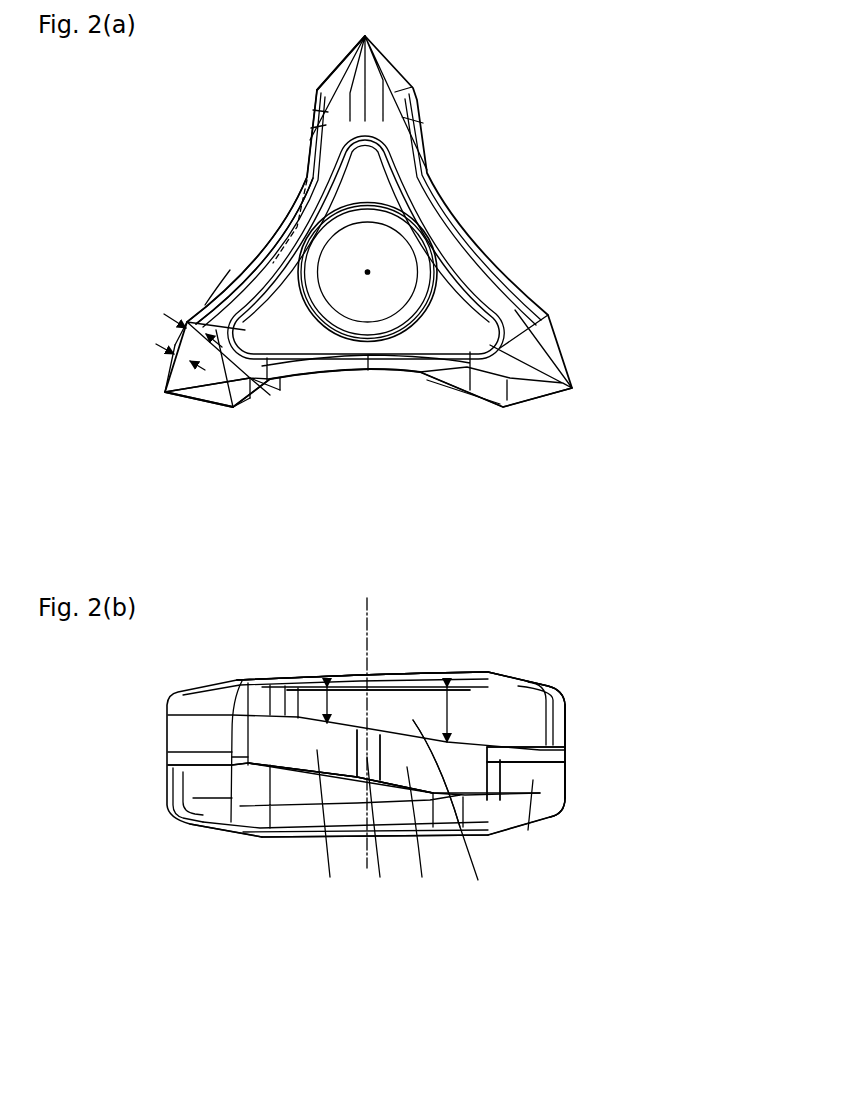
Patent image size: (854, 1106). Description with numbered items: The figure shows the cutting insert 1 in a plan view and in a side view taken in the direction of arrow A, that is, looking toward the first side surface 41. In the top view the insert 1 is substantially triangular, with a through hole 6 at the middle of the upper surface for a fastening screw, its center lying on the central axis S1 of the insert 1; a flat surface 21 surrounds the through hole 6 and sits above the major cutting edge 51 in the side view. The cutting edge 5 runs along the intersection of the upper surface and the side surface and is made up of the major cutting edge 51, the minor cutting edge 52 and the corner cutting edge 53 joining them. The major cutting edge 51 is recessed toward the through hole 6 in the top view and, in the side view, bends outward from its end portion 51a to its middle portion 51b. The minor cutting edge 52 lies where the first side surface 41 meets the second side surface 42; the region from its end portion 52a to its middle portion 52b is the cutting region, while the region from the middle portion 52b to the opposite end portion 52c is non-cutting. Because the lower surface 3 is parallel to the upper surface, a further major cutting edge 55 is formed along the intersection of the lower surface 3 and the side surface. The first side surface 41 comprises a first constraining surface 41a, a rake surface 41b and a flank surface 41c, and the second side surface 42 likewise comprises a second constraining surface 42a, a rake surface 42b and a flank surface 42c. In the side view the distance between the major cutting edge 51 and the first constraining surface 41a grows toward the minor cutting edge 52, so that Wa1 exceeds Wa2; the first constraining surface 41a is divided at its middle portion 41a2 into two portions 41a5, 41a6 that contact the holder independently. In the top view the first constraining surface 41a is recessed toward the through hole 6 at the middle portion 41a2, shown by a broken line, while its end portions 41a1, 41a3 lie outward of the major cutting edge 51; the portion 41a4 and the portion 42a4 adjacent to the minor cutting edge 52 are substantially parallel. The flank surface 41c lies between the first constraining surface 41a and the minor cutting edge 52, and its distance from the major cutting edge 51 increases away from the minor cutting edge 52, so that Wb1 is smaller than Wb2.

In FIG. 2A, the insert 1 is at (405, 66).
In FIG. 2B, the insert 1 is at (163, 690).
In FIG. 2A, the flat surface 21 is at (367, 165).
In FIG. 2B, the flat surface 21 is at (285, 675).
In FIG. 2B, the lower surface 3 is at (258, 842).
In FIG. 2B, the first side surface 41 is at (553, 925).
In FIG. 2A, the first constraining surface 41a is at (218, 42).
In FIG. 2B, the first constraining surface 41a is at (457, 898).
In FIG. 2A, the end portion 41a1 is at (183, 325).
In FIG. 2A, the middle portion 41a2 is at (297, 230).
In FIG. 2B, the middle portion 41a2 is at (380, 877).
In FIG. 2A, the end portion 41a3 is at (317, 90).
In FIG. 2A, the portion 41a4 is at (203, 303).
In FIG. 2B, the divided portion 41a5 is at (330, 877).
In FIG. 2B, the divided portion 41a6 is at (422, 877).
In FIG. 2B, the rake surface 41b is at (478, 880).
In FIG. 2A, the flank surface 41c is at (174, 345).
In FIG. 2B, the flank surface 41c is at (528, 830).
In FIG. 2B, the second side surface 42 is at (570, 778).
In FIG. 2A, the second constraining surface 42a is at (287, 383).
In FIG. 2A, the portion 42a4 is at (264, 401).
In FIG. 2A, the rake surface 42b is at (488, 393).
In FIG. 2A, the flank surface 42c is at (205, 405).
In FIG. 2B, the cutting edge 5 is at (700, 624).
In FIG. 2A, the major cutting edge 51 is at (212, 323).
In FIG. 2B, the major cutting edge 51 is at (508, 682).
In FIG. 2B, the end portion 51a is at (527, 685).
In FIG. 2B, the middle portion 51b is at (365, 677).
In FIG. 2A, the minor cutting edge 52 is at (164, 395).
In FIG. 2B, the minor cutting edge 52 is at (570, 730).
In FIG. 2B, the end portion 52a is at (566, 710).
In FIG. 2B, the middle portion 52b is at (568, 757).
In FIG. 2B, the end portion 52c is at (568, 799).
In FIG. 2B, the corner cutting edge 53 is at (564, 697).
In FIG. 2B, the major cutting edge 55 is at (240, 835).
In FIG. 2A, the through hole 6 is at (385, 245).
In FIG. 2A, the central axis S1 is at (372, 272).
In FIG. 2B, the central axis S1 is at (367, 598).
In FIG. 2A, the arrow A is at (273, 182).
In FIG. 2B, the distance Wa1 is at (447, 687).
In FIG. 2B, the distance Wa2 is at (327, 687).
In FIG. 2A, the distance Wb1 is at (192, 364).
In FIG. 2A, the distance Wb2 is at (178, 325).